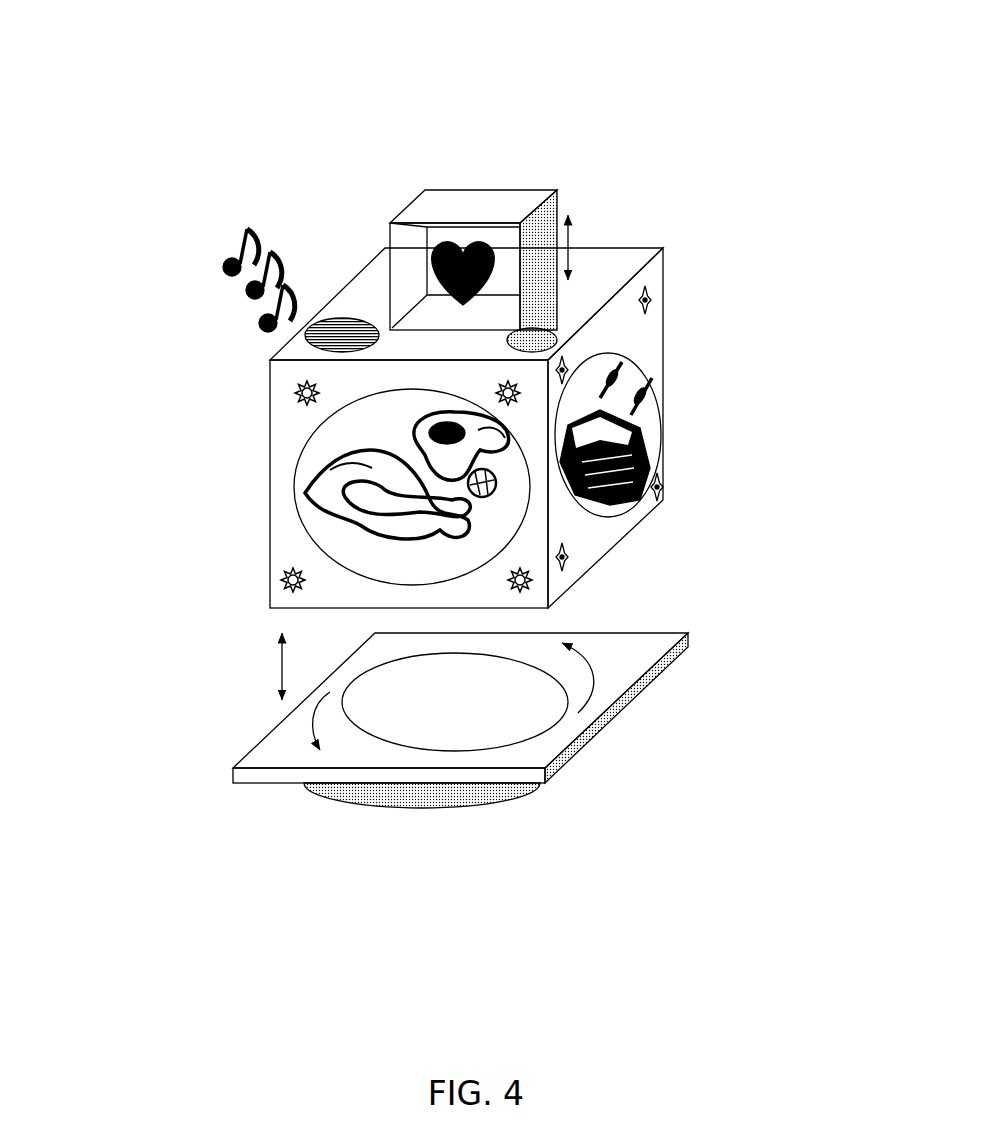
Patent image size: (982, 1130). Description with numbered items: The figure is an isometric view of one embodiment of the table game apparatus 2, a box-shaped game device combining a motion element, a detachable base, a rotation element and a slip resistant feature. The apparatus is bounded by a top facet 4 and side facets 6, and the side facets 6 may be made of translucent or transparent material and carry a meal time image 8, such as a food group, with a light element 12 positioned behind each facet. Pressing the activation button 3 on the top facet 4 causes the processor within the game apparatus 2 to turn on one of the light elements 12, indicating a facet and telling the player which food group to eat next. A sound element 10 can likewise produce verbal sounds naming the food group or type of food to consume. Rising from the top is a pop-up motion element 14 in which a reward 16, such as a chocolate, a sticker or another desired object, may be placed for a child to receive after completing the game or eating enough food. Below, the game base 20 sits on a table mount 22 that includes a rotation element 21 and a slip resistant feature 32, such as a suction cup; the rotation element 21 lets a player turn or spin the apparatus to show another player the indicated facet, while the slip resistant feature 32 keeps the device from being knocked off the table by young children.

The table game apparatus 2 is at (458, 414).
The activation button 3 is at (543, 318).
The top facet 4 is at (593, 253).
The side facets 6 is at (270, 457).
The meal time image 8 is at (298, 507).
The sound element 10 is at (347, 330).
The light element 12 is at (293, 393).
The pop-up motion element 14 is at (570, 198).
The reward 16 is at (423, 258).
The game base 20 is at (263, 793).
The rotation element 21 is at (512, 718).
The table mount 22 is at (615, 668).
The slip resistant feature 32 is at (447, 807).